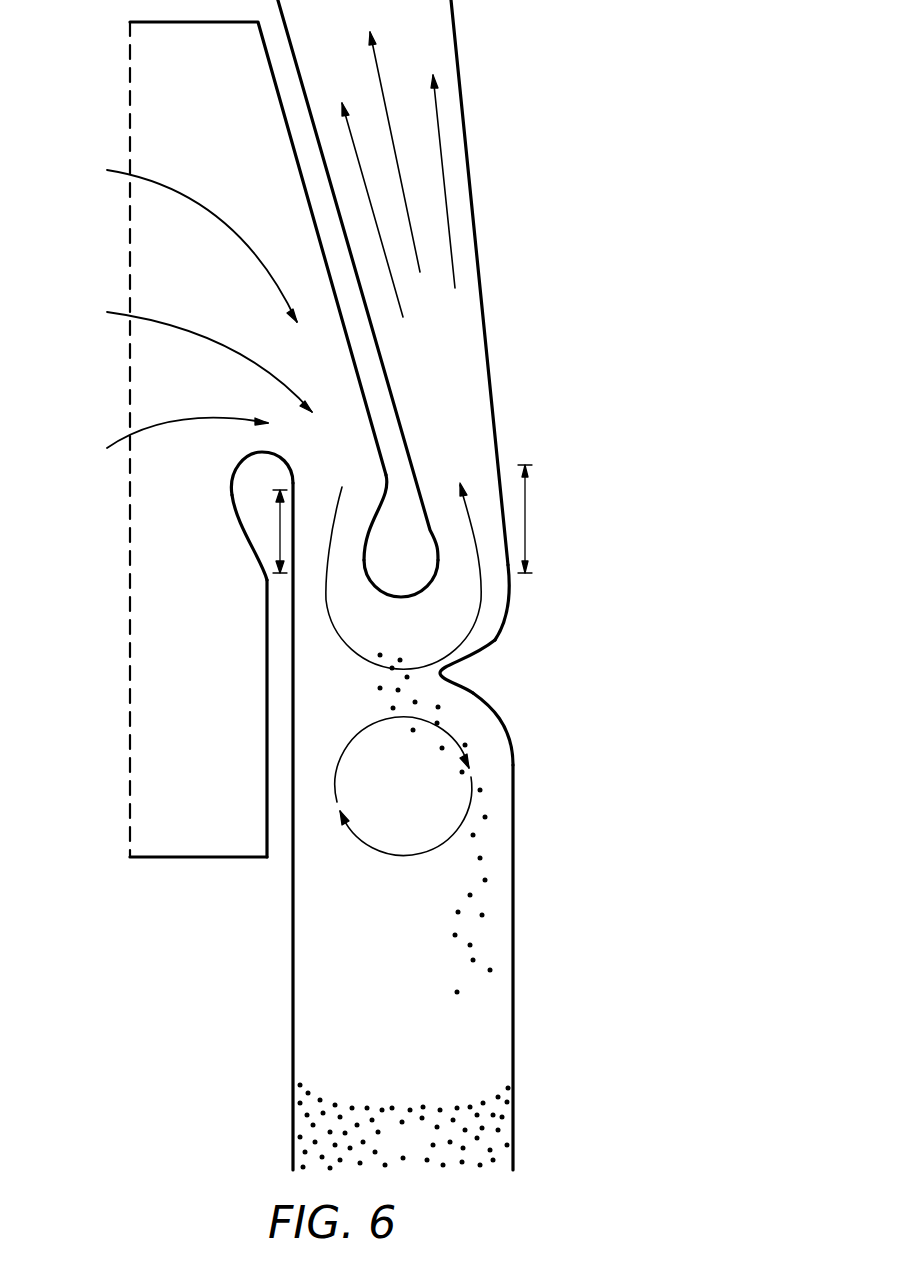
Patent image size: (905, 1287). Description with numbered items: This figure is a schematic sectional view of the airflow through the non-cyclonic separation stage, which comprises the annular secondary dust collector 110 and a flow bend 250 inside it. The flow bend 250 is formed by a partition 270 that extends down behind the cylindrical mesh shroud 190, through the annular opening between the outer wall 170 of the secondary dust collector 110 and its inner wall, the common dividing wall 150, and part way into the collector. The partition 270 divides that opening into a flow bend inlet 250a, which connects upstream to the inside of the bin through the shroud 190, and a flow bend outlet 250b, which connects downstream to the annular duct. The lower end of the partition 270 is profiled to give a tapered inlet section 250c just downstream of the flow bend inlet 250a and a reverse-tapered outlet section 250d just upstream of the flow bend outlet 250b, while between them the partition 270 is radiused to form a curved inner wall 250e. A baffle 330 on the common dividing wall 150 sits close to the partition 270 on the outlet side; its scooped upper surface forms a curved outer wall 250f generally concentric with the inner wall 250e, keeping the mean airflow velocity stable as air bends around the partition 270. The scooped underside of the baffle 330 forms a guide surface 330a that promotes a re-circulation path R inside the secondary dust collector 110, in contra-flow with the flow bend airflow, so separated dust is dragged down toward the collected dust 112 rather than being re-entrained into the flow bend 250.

The secondary dust collector 110 is at (424, 1017).
The collected dust 112 is at (424, 1152).
The common dividing wall 150 is at (483, 160).
The outer wall of the secondary dust collector 170 is at (267, 633).
The cylindrical mesh shroud 190 is at (130, 735).
The flow bend 250 is at (531, 495).
The flow bend inlet 250a is at (318, 459).
The flow bend outlet 250b is at (472, 463).
The tapered inlet section 250c is at (280, 528).
The reverse-tapered outlet section 250d is at (525, 520).
The curved inner wall of the flow bend 250e is at (403, 605).
The curved outer wall of the flow bend 250f is at (490, 637).
The partition 270 is at (400, 477).
The baffle 330 is at (463, 675).
The guide surface 330a is at (503, 723).
The re-circulation path R is at (403, 799).